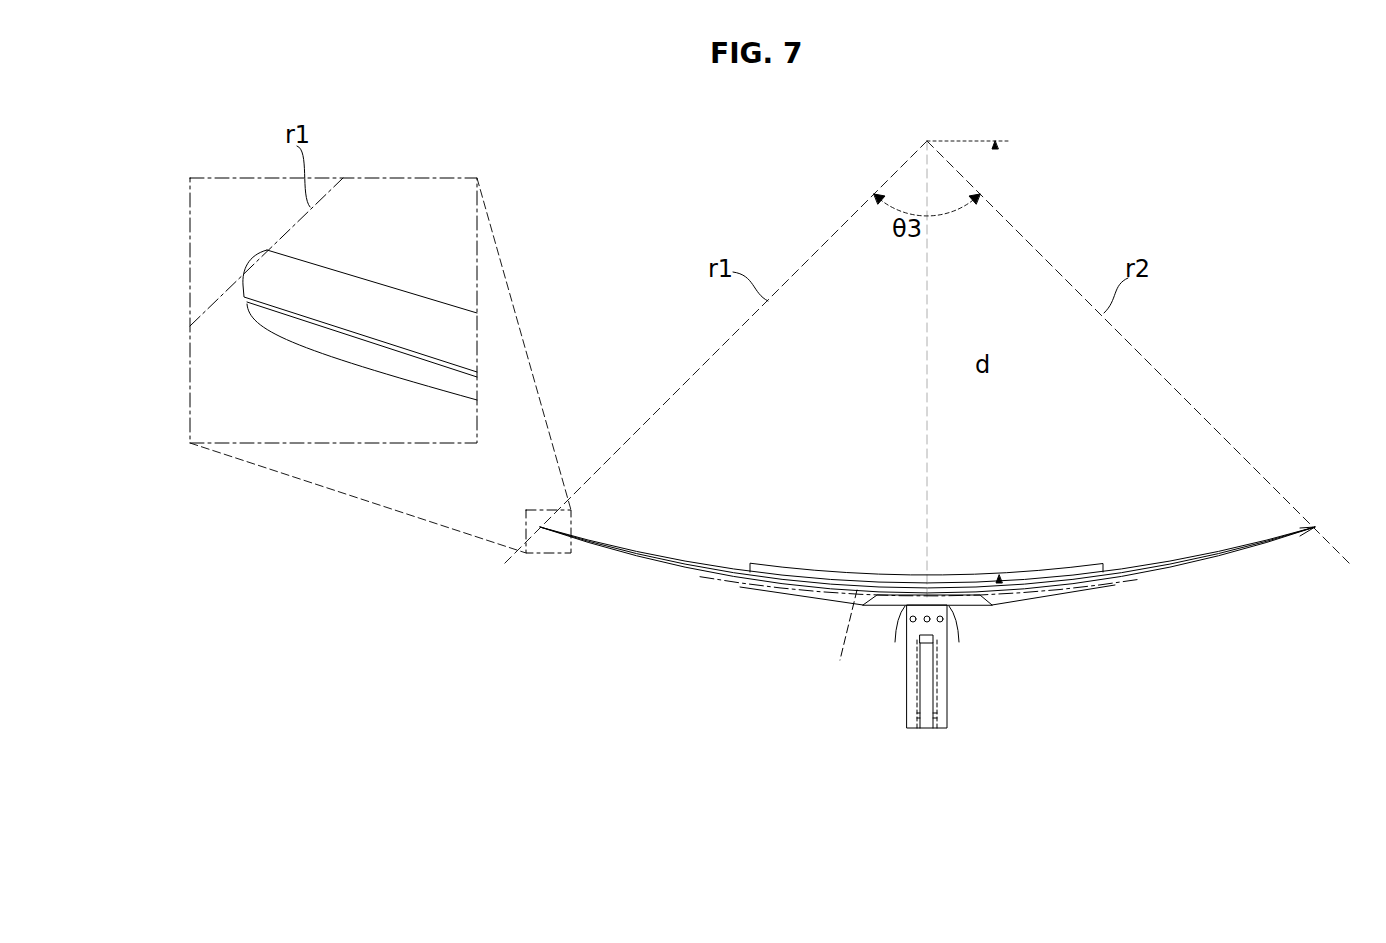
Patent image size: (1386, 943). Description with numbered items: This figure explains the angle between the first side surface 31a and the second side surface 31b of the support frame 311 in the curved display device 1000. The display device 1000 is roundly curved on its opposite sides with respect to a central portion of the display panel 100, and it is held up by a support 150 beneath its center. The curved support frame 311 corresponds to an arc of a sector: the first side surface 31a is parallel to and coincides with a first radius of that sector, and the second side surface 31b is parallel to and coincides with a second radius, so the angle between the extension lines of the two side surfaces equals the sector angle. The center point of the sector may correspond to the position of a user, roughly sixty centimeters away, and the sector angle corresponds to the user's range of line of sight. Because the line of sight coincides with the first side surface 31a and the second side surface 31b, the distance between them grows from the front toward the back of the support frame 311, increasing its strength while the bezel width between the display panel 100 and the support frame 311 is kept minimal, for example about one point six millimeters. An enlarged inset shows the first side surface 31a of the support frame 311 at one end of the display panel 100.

The first side surface 31a is at (262, 253).
The second side surface 31b is at (1318, 522).
The support frame 311 is at (385, 307).
The display panel 100 is at (637, 551).
The curved display device 1000 is at (1118, 580).
The support 150 is at (908, 678).